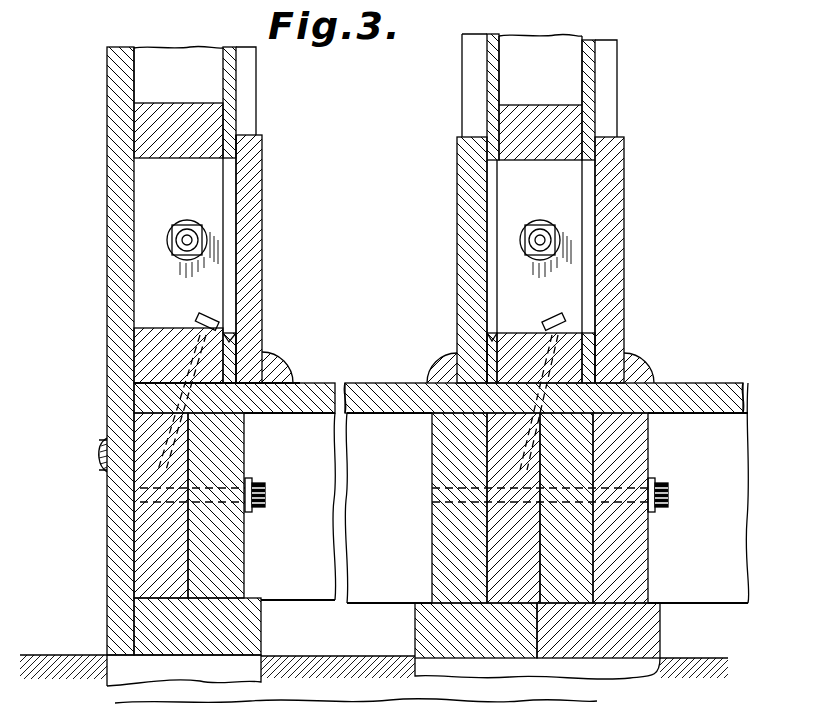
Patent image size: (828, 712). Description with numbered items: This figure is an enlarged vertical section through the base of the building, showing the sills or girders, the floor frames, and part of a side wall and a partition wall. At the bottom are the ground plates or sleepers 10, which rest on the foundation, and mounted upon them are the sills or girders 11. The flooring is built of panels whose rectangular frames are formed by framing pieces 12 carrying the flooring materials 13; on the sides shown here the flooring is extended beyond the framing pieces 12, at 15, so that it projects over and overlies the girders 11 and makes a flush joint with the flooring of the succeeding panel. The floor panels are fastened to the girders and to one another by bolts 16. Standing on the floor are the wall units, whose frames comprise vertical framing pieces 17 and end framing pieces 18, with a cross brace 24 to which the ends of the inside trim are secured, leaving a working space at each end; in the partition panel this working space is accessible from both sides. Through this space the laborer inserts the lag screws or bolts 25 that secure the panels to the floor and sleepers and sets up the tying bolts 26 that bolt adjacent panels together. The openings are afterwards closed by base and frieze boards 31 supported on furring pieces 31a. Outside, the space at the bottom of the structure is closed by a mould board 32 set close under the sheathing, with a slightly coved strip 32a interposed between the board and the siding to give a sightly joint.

The ground plates or sleepers 10 is at (262, 628).
The sills or girders 11 is at (150, 558).
The framing pieces 12 is at (228, 553).
The flooring materials 13 is at (386, 397).
The projecting flooring extension 15 is at (150, 402).
The bolts 16 is at (258, 490).
The vertical framing pieces 17 is at (358, 69).
The end framing pieces 18 is at (214, 356).
The cross brace 24 is at (213, 128).
The lag screws or bolts 25 is at (205, 316).
The tying bolts 26 is at (187, 225).
The base and frieze boards 31 is at (256, 279).
The furring pieces 31a is at (233, 338).
The mould board or base board 32 is at (118, 598).
The coved strip 32a is at (104, 466).